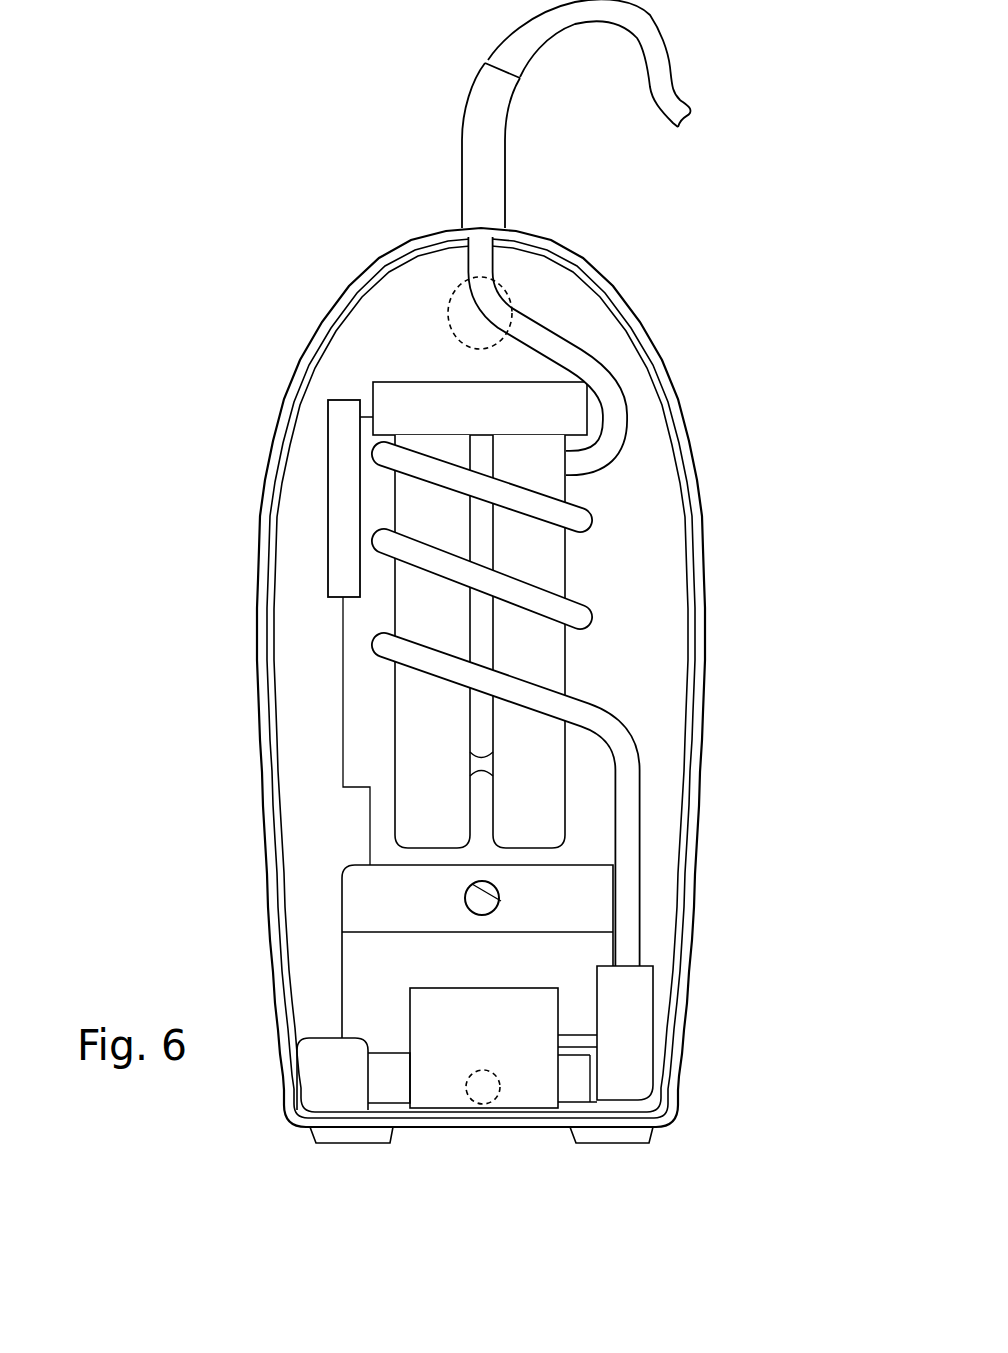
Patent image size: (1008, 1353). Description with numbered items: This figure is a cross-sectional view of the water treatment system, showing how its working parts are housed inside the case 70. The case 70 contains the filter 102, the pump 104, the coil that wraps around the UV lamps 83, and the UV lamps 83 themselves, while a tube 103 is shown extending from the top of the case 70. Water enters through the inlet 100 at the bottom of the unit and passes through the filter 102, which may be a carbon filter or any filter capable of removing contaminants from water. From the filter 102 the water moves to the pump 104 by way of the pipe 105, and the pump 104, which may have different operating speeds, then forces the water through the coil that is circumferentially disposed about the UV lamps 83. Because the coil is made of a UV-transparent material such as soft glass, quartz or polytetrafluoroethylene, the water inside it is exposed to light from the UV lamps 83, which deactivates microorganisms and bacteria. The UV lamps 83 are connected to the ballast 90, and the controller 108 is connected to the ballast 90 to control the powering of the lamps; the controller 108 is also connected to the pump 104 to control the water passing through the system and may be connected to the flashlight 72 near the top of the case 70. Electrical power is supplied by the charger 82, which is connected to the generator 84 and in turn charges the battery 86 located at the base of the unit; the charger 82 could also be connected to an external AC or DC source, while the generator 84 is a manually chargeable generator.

The case 70 is at (697, 890).
The flashlight 72 is at (513, 317).
The charger 82 is at (350, 880).
The UV lamps 83 is at (420, 613).
The generator 84 is at (362, 955).
The battery 86 is at (390, 1077).
The ballast 90 is at (572, 413).
The inlet 100 is at (493, 1103).
The filter 102 is at (448, 1093).
The cord / hose 103 is at (502, 166).
The pump 104 is at (648, 1067).
The pipe 105 is at (575, 1047).
The controller 108 is at (327, 416).